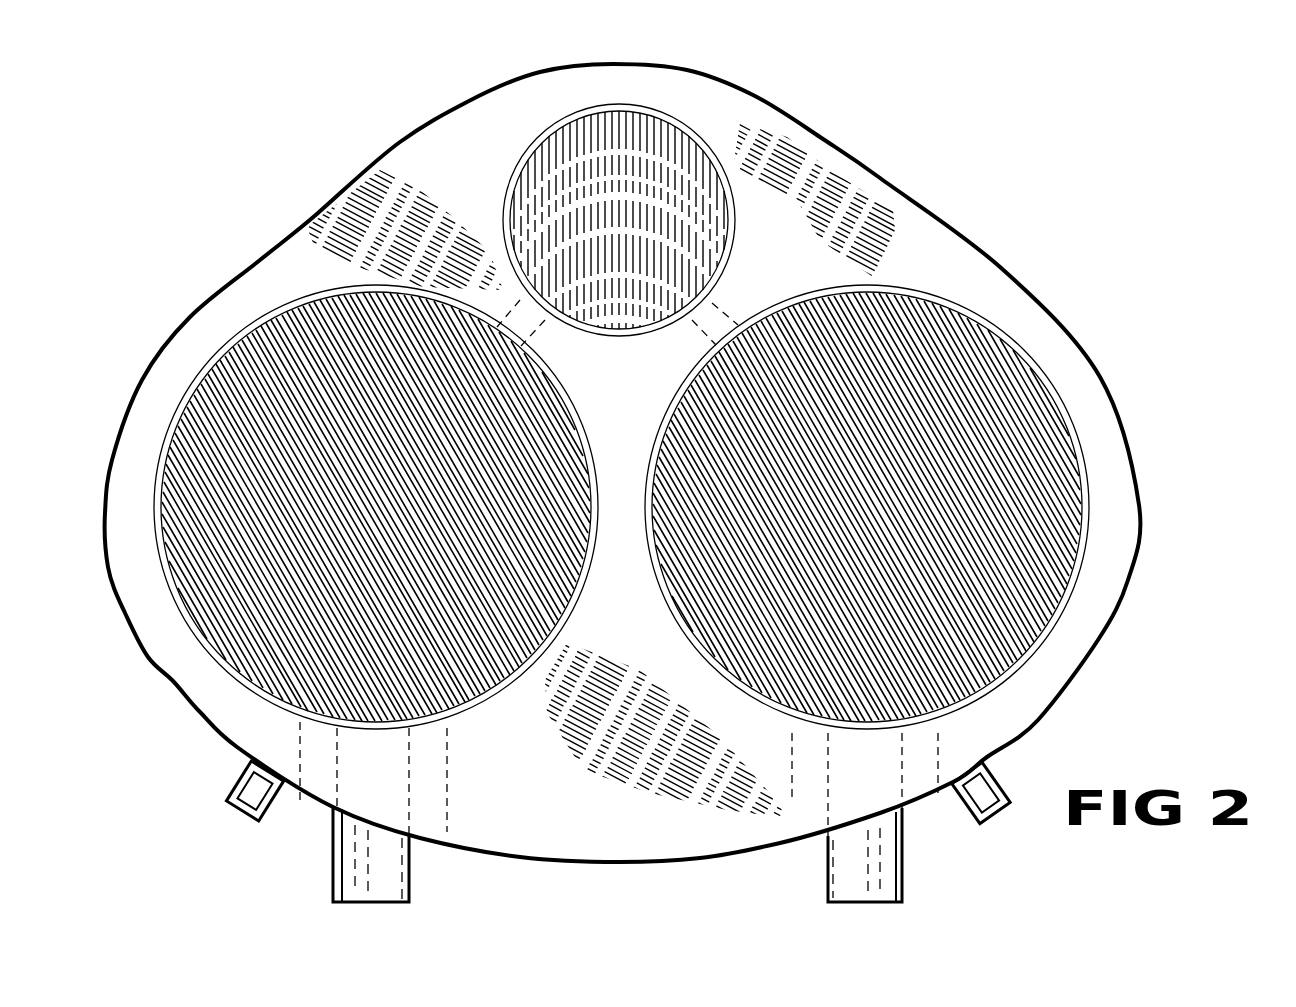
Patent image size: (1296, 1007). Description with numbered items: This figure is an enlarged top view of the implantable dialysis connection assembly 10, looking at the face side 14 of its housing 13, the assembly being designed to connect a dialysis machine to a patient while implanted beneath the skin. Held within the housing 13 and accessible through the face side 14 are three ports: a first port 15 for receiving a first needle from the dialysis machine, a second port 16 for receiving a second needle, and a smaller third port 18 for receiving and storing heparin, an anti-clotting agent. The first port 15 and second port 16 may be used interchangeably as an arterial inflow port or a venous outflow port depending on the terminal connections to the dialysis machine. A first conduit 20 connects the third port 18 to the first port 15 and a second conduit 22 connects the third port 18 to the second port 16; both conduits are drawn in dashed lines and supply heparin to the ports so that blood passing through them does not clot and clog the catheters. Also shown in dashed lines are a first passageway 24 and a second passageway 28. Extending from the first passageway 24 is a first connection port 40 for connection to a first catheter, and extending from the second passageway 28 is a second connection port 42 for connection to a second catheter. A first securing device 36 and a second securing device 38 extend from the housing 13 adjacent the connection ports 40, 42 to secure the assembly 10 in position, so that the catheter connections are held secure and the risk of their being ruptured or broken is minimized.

The implantable dialysis connection assembly 10 is at (187, 125).
The housing 13 is at (1002, 264).
The face side 14 is at (932, 247).
The first port 15 is at (1060, 463).
The second port 16 is at (250, 347).
The third port 18 is at (615, 135).
The first conduit 20 is at (696, 335).
The second conduit 22 is at (543, 338).
The first passageway 24 is at (843, 765).
The second passageway 28 is at (392, 779).
The first securing device 36 is at (992, 785).
The second securing device 38 is at (228, 792).
The first connection port 40 is at (903, 850).
The second connection port 42 is at (333, 868).